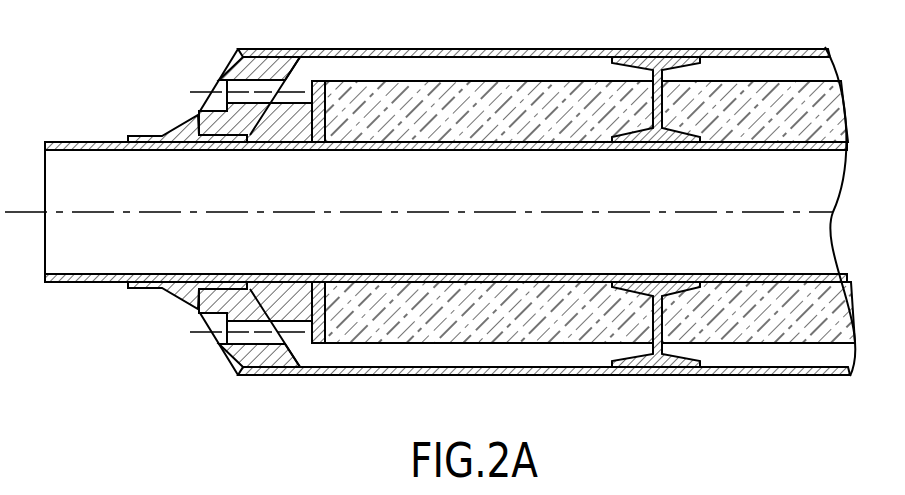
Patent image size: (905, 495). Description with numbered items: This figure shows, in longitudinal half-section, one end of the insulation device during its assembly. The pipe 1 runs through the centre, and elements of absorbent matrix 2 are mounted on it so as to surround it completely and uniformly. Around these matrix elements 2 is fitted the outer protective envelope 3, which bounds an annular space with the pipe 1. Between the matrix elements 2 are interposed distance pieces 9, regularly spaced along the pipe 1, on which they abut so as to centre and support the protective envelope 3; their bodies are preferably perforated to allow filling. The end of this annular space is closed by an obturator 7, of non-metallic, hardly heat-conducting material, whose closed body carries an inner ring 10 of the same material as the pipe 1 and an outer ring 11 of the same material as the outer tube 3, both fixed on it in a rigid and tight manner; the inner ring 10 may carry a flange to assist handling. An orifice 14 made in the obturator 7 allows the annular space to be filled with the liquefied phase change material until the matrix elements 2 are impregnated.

The pipe 1 is at (78, 284).
The absorbent matrix 2 is at (570, 333).
The outer protective envelope 3 is at (333, 375).
The obturator 7 is at (233, 357).
The distance piece 9 is at (663, 377).
The inner ring 10 is at (163, 293).
The outer ring 11 is at (257, 375).
The orifice 14 is at (203, 87).